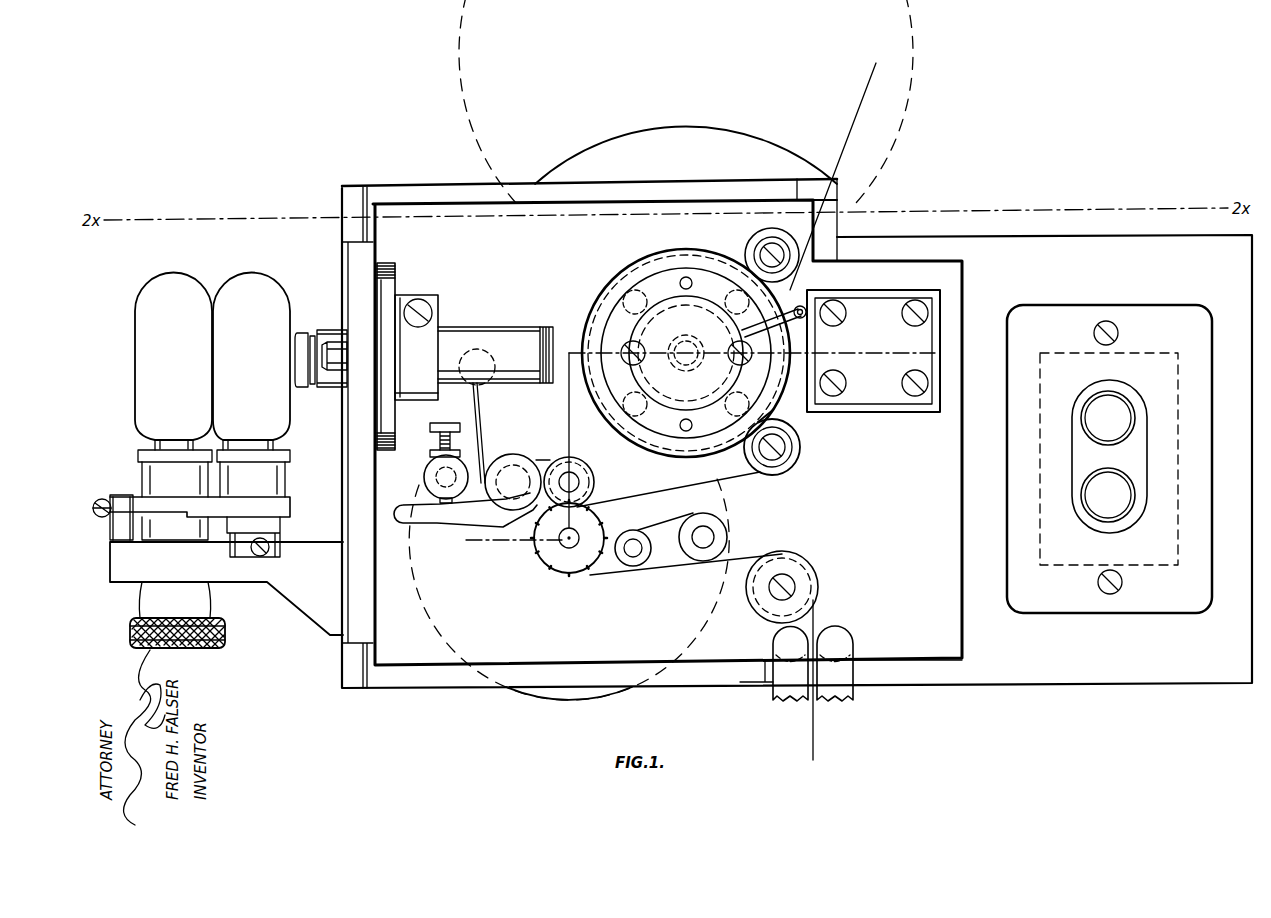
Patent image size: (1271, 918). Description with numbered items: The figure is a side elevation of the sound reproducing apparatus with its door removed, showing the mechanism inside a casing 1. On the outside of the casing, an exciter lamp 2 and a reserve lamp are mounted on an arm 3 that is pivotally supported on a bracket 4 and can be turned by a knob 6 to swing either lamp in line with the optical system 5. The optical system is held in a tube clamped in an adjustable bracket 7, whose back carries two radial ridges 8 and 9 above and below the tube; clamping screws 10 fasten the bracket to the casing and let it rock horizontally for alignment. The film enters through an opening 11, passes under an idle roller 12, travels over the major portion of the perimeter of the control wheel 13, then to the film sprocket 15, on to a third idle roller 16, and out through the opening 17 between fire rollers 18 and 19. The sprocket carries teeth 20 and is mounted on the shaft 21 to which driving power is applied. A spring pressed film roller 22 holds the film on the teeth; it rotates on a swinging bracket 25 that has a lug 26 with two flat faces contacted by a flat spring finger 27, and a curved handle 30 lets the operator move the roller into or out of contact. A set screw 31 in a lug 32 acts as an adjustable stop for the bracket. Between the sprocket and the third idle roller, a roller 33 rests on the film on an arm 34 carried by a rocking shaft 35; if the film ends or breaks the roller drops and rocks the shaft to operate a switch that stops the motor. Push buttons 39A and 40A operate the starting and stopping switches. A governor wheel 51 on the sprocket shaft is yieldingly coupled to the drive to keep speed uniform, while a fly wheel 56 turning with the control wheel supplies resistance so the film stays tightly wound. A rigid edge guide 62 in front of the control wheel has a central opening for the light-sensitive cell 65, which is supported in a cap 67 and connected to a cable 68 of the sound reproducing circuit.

The casing 1 is at (416, 690).
The exciter lamp 2 is at (186, 278).
The arm 3 is at (290, 500).
The bracket 4 is at (310, 542).
The optical system 5 is at (322, 333).
The knob 6 is at (224, 633).
The adjustable bracket 7 is at (400, 289).
The radial ridge 8 is at (380, 278).
The radial ridge 9 is at (380, 422).
The clamping screw 10 is at (340, 357).
The opening 11 is at (811, 186).
The idle roller 12 is at (752, 240).
The control wheel 13 is at (632, 268).
The film sprocket 15 is at (801, 447).
The third idle roller 16 is at (818, 575).
The opening 17 is at (775, 673).
The fire roller 18 is at (773, 637).
The fire roller 19 is at (853, 640).
The teeth 20 is at (536, 548).
The shaft 21 is at (567, 548).
The spring pressed film roller 22 is at (593, 470).
The swinging bracket 25 is at (545, 462).
The lug 26 is at (518, 455).
The flat spring finger 27 is at (479, 414).
The handle 30 is at (406, 521).
The set screw 31 is at (434, 436).
The lug 32 is at (425, 477).
The roller 33 is at (633, 567).
The arm 34 is at (660, 526).
The rocking shaft 35 is at (712, 530).
The push button 39A is at (1130, 404).
The push button 40A is at (1124, 516).
The governor wheel 51 is at (541, 698).
The fly wheel 56 is at (597, 152).
The rigid edge guide 62 is at (606, 301).
The light-sensitive cell 65 is at (858, 410).
The cap 67 is at (632, 326).
The cable 68 is at (792, 300).